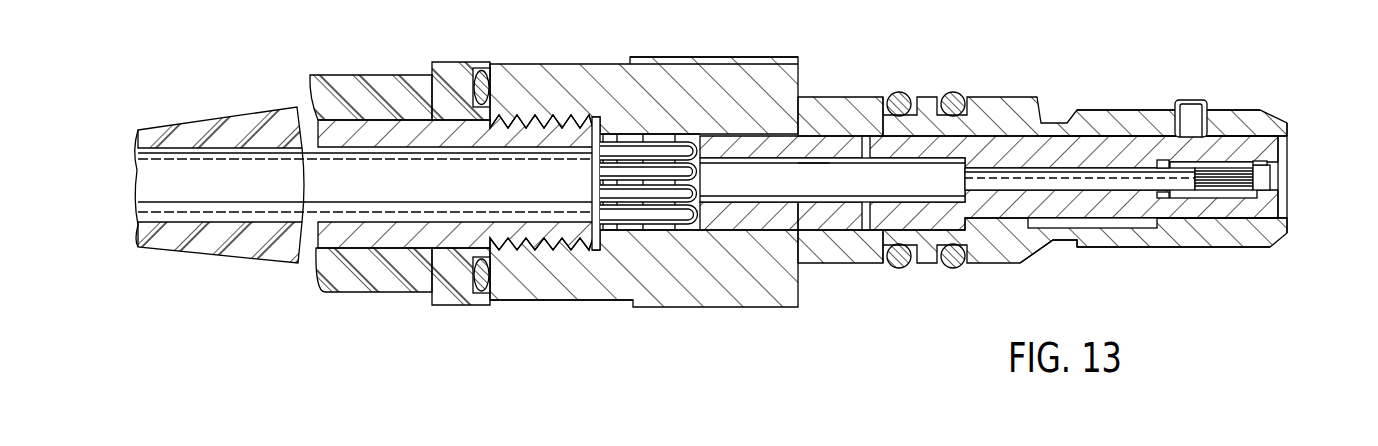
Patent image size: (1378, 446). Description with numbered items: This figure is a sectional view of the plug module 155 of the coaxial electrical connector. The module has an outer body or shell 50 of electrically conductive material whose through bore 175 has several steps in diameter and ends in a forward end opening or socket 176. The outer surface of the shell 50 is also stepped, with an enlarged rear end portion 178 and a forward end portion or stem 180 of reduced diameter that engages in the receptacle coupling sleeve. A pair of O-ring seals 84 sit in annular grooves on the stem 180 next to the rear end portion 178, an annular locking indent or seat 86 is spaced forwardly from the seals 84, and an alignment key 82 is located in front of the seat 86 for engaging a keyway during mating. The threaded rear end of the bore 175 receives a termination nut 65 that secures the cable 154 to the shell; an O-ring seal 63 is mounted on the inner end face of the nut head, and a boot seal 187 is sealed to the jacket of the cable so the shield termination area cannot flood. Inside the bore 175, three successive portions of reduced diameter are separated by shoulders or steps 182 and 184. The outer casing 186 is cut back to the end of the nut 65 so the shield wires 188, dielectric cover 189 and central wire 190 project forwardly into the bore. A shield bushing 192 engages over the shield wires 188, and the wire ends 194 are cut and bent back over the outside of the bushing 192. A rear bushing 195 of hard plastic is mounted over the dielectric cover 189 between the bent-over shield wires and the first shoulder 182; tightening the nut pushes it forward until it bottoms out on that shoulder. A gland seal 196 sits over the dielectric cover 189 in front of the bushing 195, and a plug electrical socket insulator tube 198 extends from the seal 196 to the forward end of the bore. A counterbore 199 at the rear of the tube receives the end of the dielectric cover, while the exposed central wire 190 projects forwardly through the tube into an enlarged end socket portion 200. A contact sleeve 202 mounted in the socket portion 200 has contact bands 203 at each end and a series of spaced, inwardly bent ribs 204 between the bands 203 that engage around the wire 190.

The outer body or shell 50 is at (595, 72).
The O-ring seal 63 is at (490, 70).
The termination nut 65 is at (463, 62).
The alignment key 82 is at (1194, 106).
The O-ring seals 84 is at (907, 267).
The annular locking indent or seat 86 is at (1058, 246).
The cable 154 is at (347, 71).
The plug module 155 is at (515, 305).
The through bore 175 is at (867, 134).
The forward end opening or socket 176 is at (1288, 152).
The enlarged rear end portion 178 is at (665, 58).
The forward end portion or stem 180 is at (997, 96).
The first shoulder or step 182 is at (798, 130).
The second shoulder or step 184 is at (1040, 130).
The outer casing (cable) 186 is at (356, 193).
The boot seal 187 is at (273, 118).
The shield wires 188 is at (673, 225).
The dielectric cover 189 is at (808, 183).
The central wire 190 is at (1105, 192).
The shield bushing 192 is at (625, 222).
The wire ends 194 is at (670, 143).
The rear bushing 195 is at (770, 229).
The gland seal 196 is at (849, 217).
The plug electrical socket insulator tube 198 is at (1137, 147).
The counterbore 199 is at (920, 157).
The enlarged end socket portion 200 is at (1187, 198).
The contact sleeve 202 is at (1237, 167).
The contact bands 203 is at (1165, 160).
The inwardly bent ribs 204 is at (1220, 195).